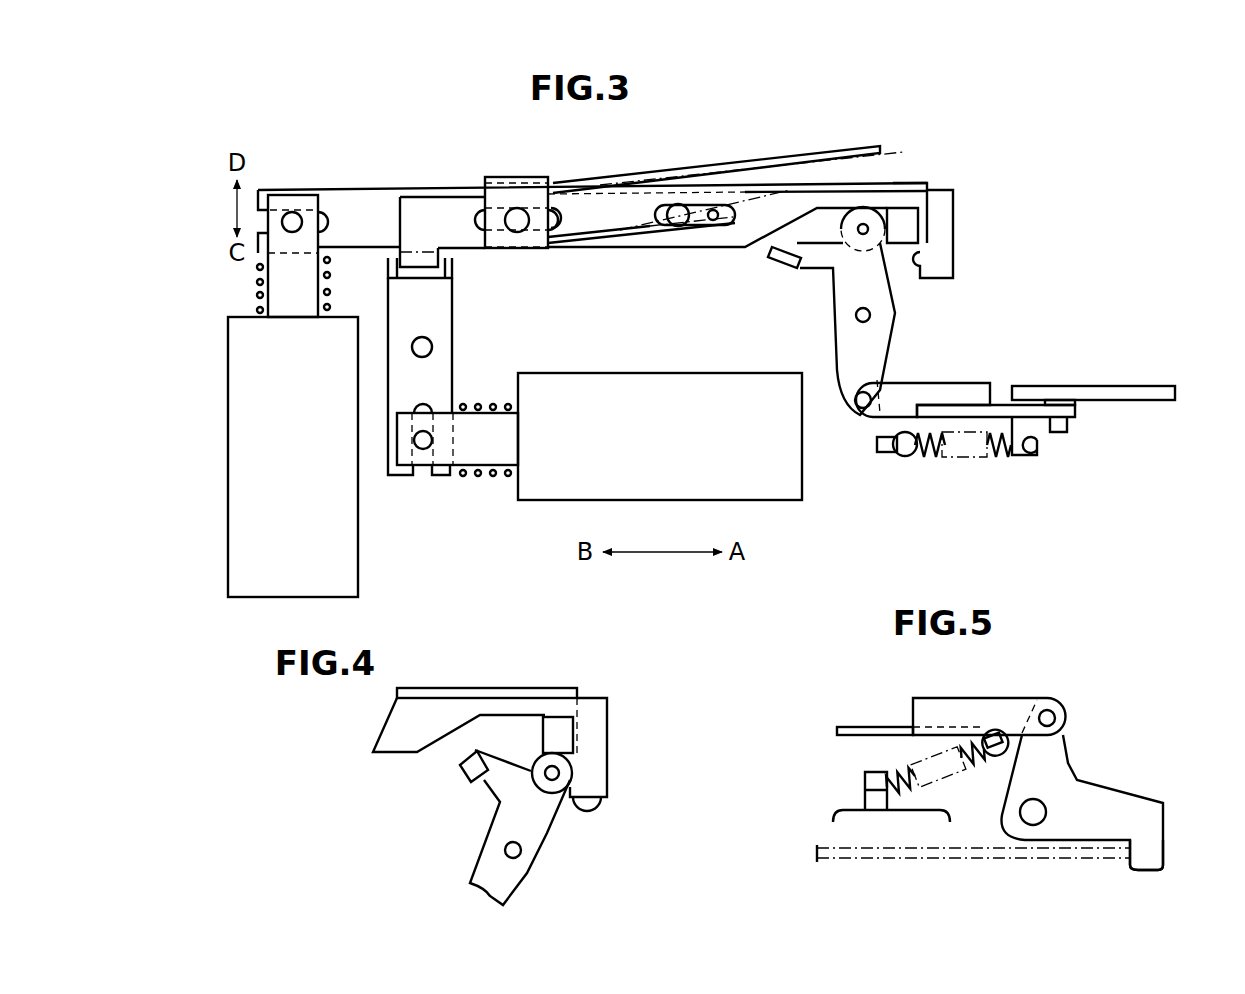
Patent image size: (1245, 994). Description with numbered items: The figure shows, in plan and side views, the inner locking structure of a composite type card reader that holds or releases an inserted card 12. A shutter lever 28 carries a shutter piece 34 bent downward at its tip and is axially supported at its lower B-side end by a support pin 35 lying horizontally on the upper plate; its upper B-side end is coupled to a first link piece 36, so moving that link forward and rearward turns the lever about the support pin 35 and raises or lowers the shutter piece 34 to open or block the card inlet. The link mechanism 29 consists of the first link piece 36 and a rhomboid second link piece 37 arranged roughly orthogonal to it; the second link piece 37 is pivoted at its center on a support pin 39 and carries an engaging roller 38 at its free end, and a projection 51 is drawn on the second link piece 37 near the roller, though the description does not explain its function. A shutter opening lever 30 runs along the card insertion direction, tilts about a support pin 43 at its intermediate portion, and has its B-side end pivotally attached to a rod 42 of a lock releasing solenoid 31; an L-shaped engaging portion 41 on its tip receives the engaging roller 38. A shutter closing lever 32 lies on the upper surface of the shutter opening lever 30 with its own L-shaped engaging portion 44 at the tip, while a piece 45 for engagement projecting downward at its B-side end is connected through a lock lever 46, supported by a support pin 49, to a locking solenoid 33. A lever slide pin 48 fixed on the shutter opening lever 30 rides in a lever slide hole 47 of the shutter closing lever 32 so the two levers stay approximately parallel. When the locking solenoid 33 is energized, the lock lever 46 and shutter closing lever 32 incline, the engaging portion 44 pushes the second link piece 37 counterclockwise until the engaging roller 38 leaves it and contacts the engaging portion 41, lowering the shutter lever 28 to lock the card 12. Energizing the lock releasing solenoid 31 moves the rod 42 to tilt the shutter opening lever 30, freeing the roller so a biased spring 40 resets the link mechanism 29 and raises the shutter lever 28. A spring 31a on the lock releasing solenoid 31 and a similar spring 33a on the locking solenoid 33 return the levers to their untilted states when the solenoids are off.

In FIG. 5, the card 12 is at (1090, 860).
In FIG. 3, the shutter lever 28 is at (1068, 395).
In FIG. 5, the shutter lever 28 is at (1100, 783).
In FIG. 3, the link mechanism 29 is at (950, 342).
In FIG. 3, the shutter opening lever 30 is at (380, 212).
In FIG. 4, the shutter opening lever 30 is at (418, 690).
In FIG. 3, the lock releasing solenoid 31 is at (340, 527).
In FIG. 3, the spring 31a is at (330, 268).
In FIG. 3, the shutter closing lever 32 is at (447, 210).
In FIG. 4, the shutter closing lever 32 is at (456, 705).
In FIG. 3, the locking solenoid 33 is at (628, 385).
In FIG. 3, the spring 33a is at (473, 478).
In FIG. 5, the shutter piece 34 is at (1150, 851).
In FIG. 3, the support pin 35 is at (1057, 432).
In FIG. 5, the support pin 35 is at (1032, 820).
In FIG. 3, the first link piece 36 is at (972, 387).
In FIG. 5, the first link piece 36 is at (951, 705).
In FIG. 3, the second link piece 37 is at (850, 345).
In FIG. 4, the second link piece 37 is at (537, 878).
In FIG. 3, the engaging roller 38 is at (846, 230).
In FIG. 4, the engaging roller 38 is at (610, 770).
In FIG. 3, the support pin 39 is at (856, 316).
In FIG. 4, the support pin 39 is at (525, 850).
In FIG. 3, the biased spring 40 is at (953, 460).
In FIG. 5, the biased spring 40 is at (947, 782).
In FIG. 3, the L-shaped engaging portion 41 is at (905, 175).
In FIG. 4, the L-shaped engaging portion 41 is at (553, 710).
In FIG. 3, the rod 42 is at (304, 230).
In FIG. 3, the support pin 43 is at (523, 214).
In FIG. 3, the L-shaped engaging portion 44 is at (860, 188).
In FIG. 4, the L-shaped engaging portion 44 is at (607, 800).
In FIG. 3, the piece for engagement 45 is at (452, 270).
In FIG. 3, the lock lever 46 is at (452, 364).
In FIG. 3, the lever slide hole 47 is at (558, 186).
In FIG. 3, the lever slide pin 48 is at (680, 210).
In FIG. 3, the support pin 49 is at (432, 344).
In FIG. 3, the projection 51 is at (780, 266).
In FIG. 4, the projection 51 is at (460, 773).